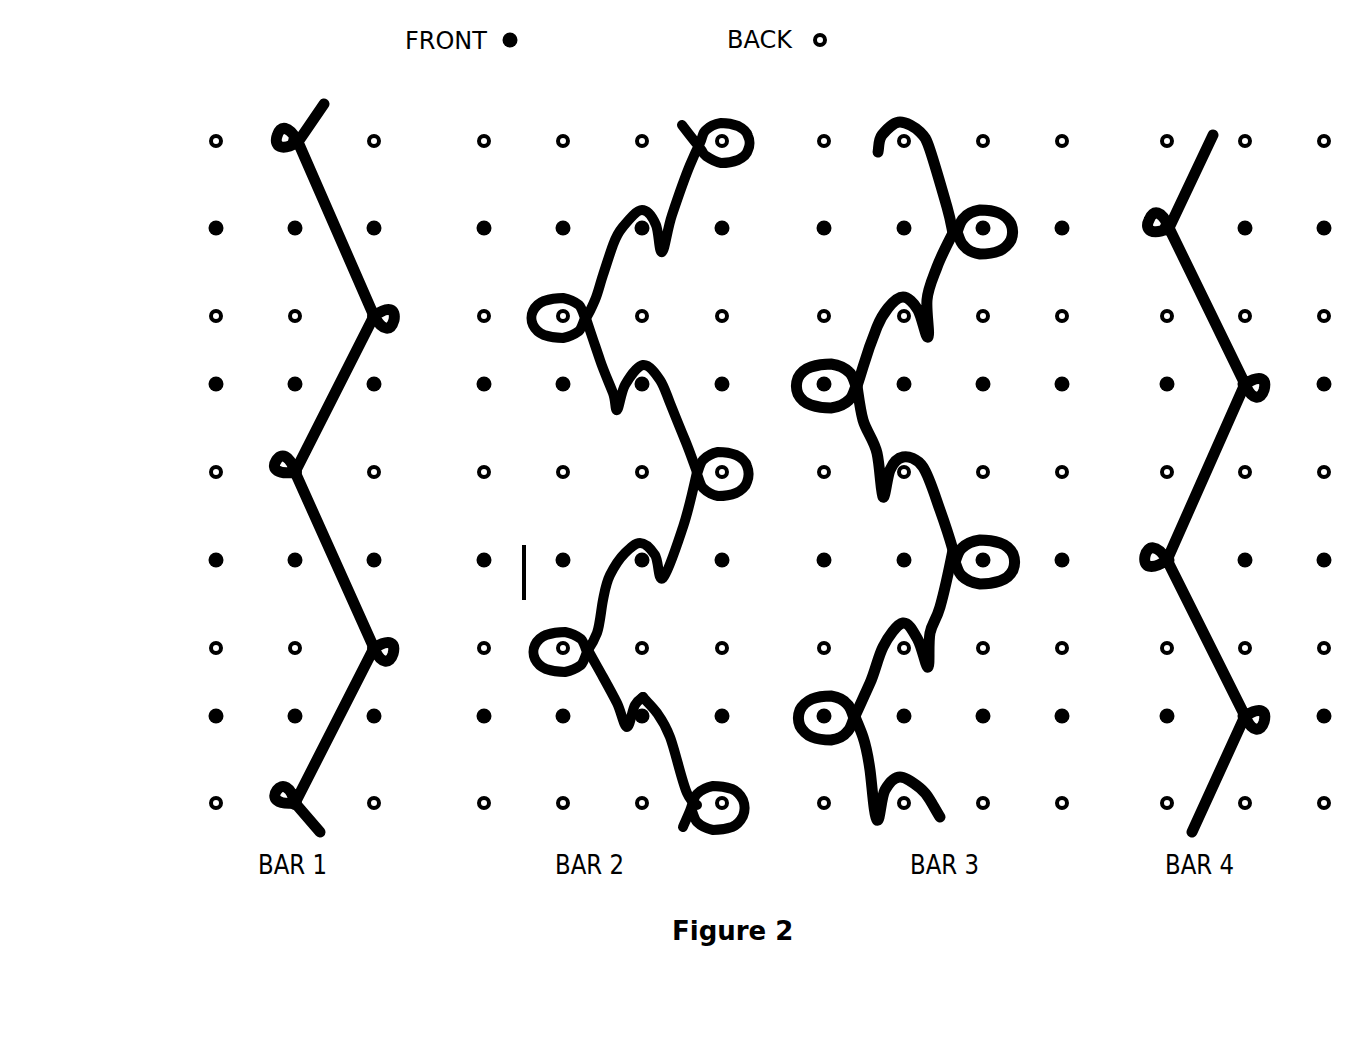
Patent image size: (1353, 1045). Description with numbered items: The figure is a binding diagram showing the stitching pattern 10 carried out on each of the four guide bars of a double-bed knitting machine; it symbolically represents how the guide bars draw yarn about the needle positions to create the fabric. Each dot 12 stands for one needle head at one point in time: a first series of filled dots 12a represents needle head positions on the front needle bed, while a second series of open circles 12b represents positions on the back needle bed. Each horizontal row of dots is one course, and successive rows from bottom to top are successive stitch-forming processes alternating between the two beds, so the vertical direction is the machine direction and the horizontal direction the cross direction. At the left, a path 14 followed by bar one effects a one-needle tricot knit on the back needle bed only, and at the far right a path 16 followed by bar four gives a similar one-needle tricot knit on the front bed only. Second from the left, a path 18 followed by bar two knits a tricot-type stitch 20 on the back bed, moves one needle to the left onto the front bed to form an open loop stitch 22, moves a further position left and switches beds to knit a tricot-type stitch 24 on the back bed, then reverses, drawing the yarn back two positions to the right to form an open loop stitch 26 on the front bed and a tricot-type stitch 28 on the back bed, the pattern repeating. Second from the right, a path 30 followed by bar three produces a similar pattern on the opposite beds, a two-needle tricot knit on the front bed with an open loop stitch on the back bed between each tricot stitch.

The stitching pattern 10 is at (250, 193).
The dot 12 is at (817, 478).
The filled dots 12a is at (642, 386).
The open circles 12b is at (1057, 648).
The path followed by bar 1 14 is at (313, 432).
The path followed by bar 4 16 is at (1215, 457).
The path followed by bar 2 18 is at (649, 476).
The tricot-type stitch 20 is at (723, 800).
The open loop stitch 22 is at (653, 700).
The tricot-type stitch 24 is at (543, 667).
The open loop stitch 26 is at (633, 550).
The tricot-type stitch 28 is at (737, 467).
The path followed by bar 3 30 is at (947, 507).